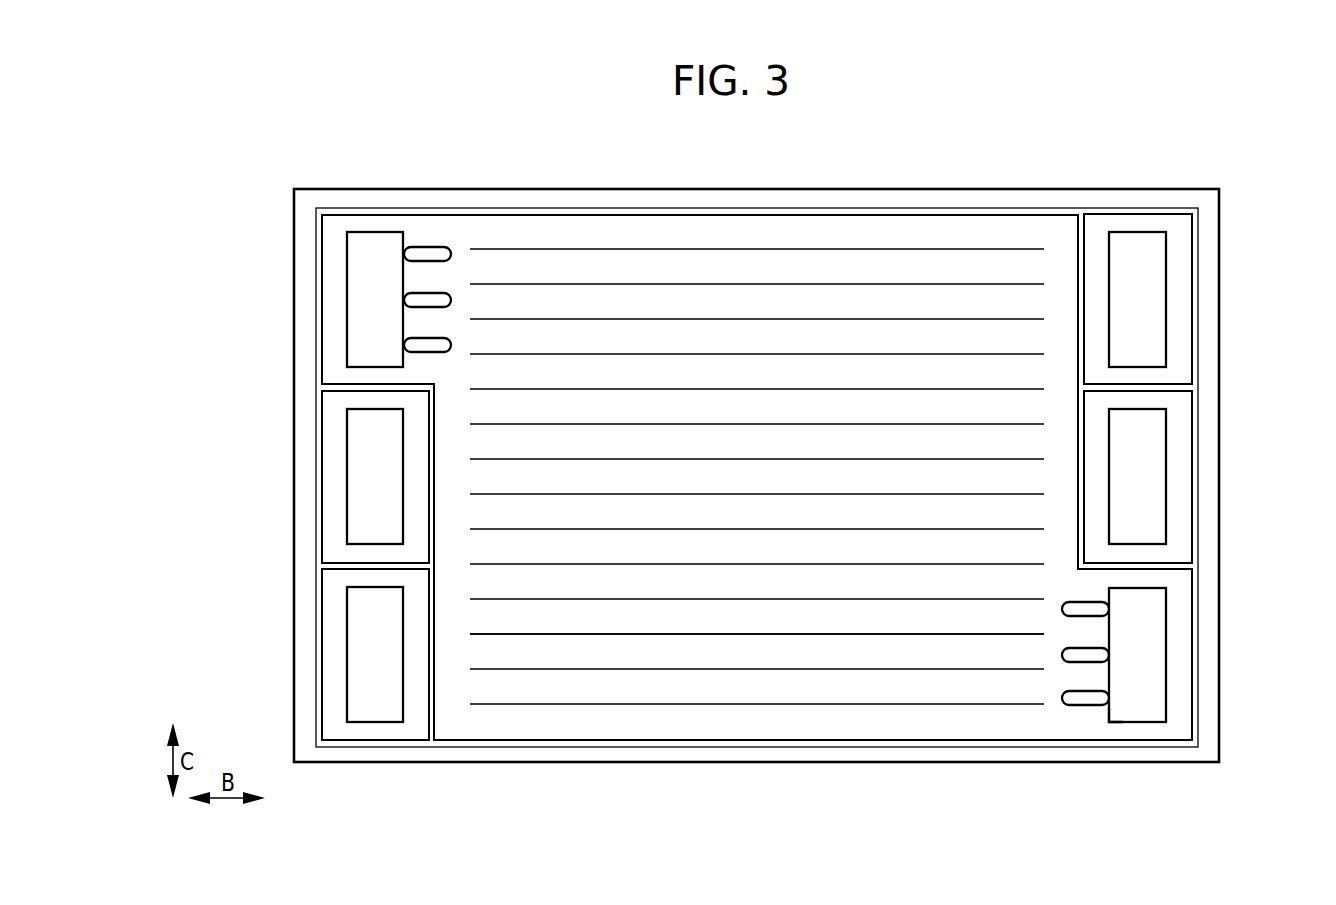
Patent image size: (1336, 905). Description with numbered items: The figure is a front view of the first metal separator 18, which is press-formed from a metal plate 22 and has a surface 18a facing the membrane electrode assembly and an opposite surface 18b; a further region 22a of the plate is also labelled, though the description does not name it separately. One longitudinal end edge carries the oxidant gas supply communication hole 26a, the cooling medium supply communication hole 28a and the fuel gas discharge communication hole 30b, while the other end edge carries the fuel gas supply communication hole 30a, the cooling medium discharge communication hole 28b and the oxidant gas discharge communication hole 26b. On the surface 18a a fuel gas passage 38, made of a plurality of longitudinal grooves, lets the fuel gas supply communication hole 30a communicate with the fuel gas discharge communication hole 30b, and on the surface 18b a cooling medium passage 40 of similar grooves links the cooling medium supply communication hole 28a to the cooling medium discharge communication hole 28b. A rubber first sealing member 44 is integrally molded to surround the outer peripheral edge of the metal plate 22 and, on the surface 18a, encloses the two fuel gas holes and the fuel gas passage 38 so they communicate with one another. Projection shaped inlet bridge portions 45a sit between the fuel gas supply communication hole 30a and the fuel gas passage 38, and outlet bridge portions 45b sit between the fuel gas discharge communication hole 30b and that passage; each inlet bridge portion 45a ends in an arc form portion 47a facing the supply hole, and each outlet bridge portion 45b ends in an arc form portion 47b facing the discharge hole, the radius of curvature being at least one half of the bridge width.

The first metal separator 18 is at (806, 145).
The metal plate 22 is at (847, 145).
The surface of the first metal separator 18a is at (592, 755).
The surface of the first metal separator 18b is at (660, 755).
The metal plate of second separator 22a is at (1208, 360).
The oxidant gas supply communication hole 26a is at (1147, 272).
The oxidant gas discharge communication hole 26b is at (360, 627).
The cooling medium supply communication hole 28a is at (1152, 445).
The cooling medium discharge communication hole 28b is at (358, 443).
The fuel gas supply communication hole 30a is at (360, 279).
The fuel gas discharge communication hole 30b is at (1152, 630).
The fuel gas passage 38 is at (630, 305).
The cooling medium passage 40 is at (843, 648).
The first sealing member 44 is at (1013, 189).
The inlet bridge portions 45a is at (442, 254).
The outlet bridge portions 45b is at (1078, 697).
The arc form portion 47a is at (405, 248).
The arc form portion 47b is at (1109, 722).